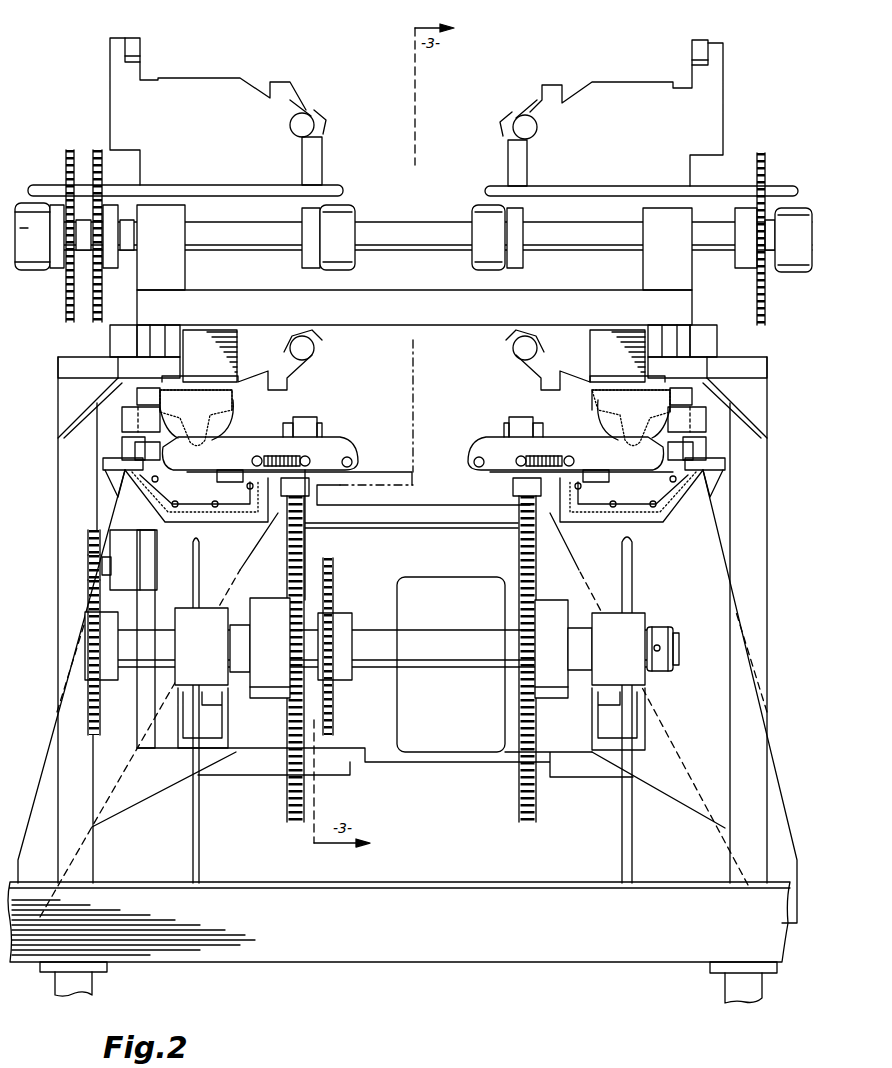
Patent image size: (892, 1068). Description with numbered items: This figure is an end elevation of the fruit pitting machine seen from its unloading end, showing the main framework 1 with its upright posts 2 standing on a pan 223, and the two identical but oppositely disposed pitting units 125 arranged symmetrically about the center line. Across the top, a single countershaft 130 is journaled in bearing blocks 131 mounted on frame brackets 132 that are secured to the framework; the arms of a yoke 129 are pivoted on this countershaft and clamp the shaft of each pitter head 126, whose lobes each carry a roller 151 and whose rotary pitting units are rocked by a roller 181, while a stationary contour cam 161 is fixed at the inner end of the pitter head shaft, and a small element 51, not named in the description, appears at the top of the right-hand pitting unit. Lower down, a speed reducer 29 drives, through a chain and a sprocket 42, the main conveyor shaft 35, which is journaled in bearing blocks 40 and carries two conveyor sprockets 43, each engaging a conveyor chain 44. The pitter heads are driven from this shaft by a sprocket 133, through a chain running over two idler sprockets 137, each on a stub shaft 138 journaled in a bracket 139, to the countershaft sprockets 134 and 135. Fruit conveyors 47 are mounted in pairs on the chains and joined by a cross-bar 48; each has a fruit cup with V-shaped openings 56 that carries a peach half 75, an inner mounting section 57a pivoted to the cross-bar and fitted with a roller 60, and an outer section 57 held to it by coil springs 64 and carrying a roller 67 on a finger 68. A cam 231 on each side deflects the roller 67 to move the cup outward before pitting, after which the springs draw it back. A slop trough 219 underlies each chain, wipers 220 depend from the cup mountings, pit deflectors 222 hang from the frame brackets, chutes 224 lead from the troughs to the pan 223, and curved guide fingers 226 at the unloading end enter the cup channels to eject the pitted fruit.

The main framework 1 is at (55, 473).
The upright post 2 is at (55, 990).
The speed reducer 29 is at (447, 568).
The main conveyor shaft 35 is at (378, 634).
The bearing block 40 is at (656, 624).
The sprocket 42 is at (336, 578).
The conveyor sprocket 43 is at (286, 815).
The conveyor chain 44 is at (285, 520).
The fruit conveyor 47 is at (226, 430).
The cross-bar 48 is at (432, 466).
The stop block 51 is at (692, 45).
The V-shaped opening 56 is at (200, 441).
The outer section 57 is at (245, 440).
The inner section 57a is at (330, 452).
The roller 60 is at (316, 420).
The coil spring 64 is at (270, 455).
The roller 67 is at (122, 450).
The finger 68 is at (122, 420).
The peach half 75 is at (212, 405).
The pitting unit 125 is at (245, 78).
The pitter head 126 is at (205, 80).
The yoke 129 is at (330, 186).
The countershaft 130 is at (420, 222).
The bearing block 131 is at (180, 275).
The frame bracket 132 is at (82, 362).
The sprocket 133 is at (88, 703).
The sprocket 134 is at (98, 150).
The sprocket 135 is at (66, 156).
The idler sprocket 137 is at (88, 536).
The stub shaft 138 is at (88, 562).
The bracket 139 is at (157, 562).
The roller 151 is at (140, 40).
The stationary contour cam 161 is at (320, 150).
The roller 181 is at (304, 116).
The slop trough 219 is at (150, 504).
The wiper 220 is at (228, 505).
The pit deflector 222 is at (223, 322).
The pan 223 is at (148, 884).
The chute 224 is at (46, 777).
The curved guide finger 226 is at (199, 566).
The cam 231 is at (115, 465).